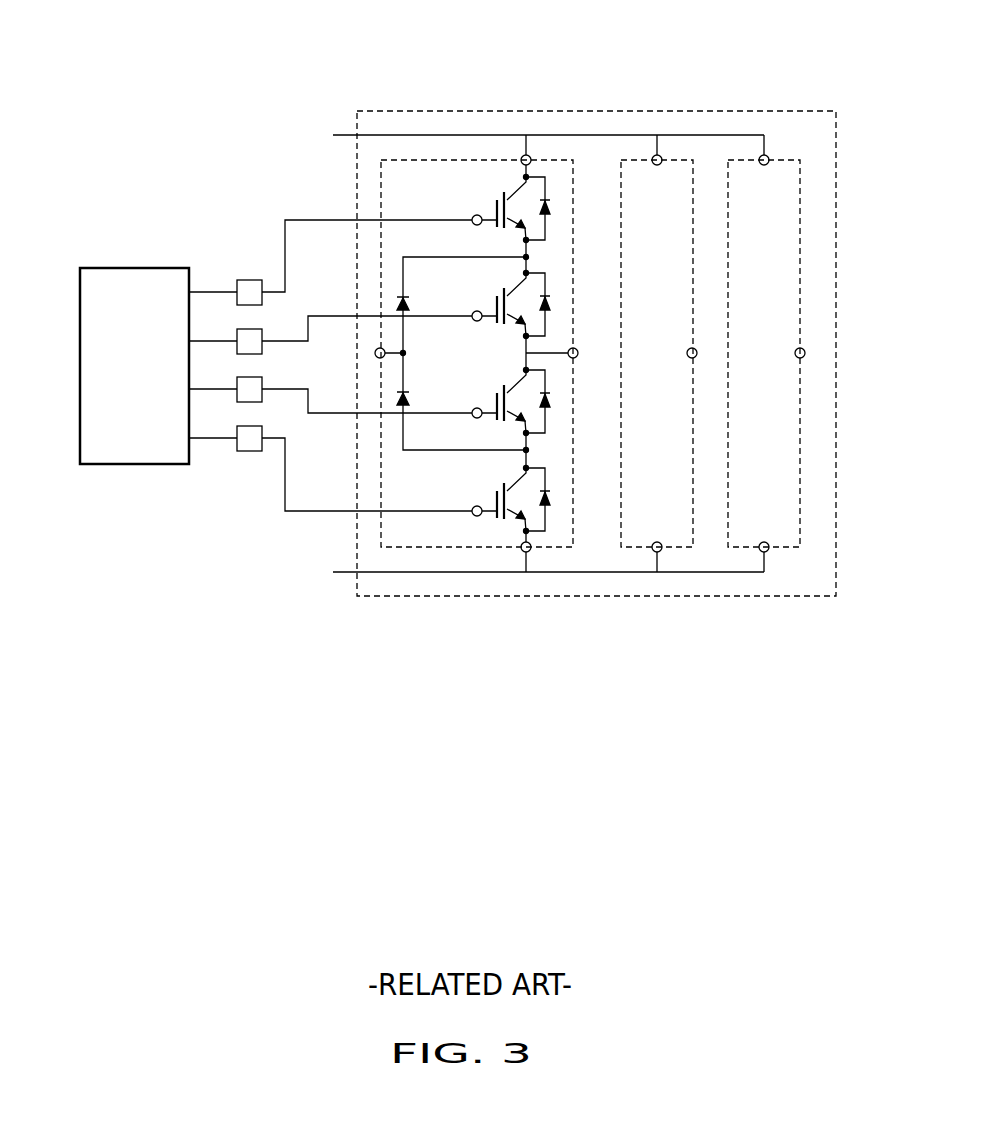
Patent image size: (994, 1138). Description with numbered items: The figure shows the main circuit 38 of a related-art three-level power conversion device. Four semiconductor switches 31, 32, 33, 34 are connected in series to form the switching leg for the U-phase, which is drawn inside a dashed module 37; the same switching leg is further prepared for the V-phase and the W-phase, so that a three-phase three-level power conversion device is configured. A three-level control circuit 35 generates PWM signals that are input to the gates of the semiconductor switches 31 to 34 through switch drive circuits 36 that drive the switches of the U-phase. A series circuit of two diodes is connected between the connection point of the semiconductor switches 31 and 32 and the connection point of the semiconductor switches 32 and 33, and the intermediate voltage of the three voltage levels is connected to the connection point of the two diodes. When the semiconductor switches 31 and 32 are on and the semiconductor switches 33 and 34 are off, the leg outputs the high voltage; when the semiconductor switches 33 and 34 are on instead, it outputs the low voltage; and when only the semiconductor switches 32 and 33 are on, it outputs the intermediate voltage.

The semiconductor switch 31 is at (490, 208).
The semiconductor switch 32 is at (487, 303).
The semiconductor switch 33 is at (488, 402).
The semiconductor switch 34 is at (488, 500).
The three-level control circuit 35 is at (135, 263).
The switch drive circuit 36 is at (252, 278).
The three-level power module (one phase) 37 is at (412, 155).
The main circuit 38 is at (478, 108).